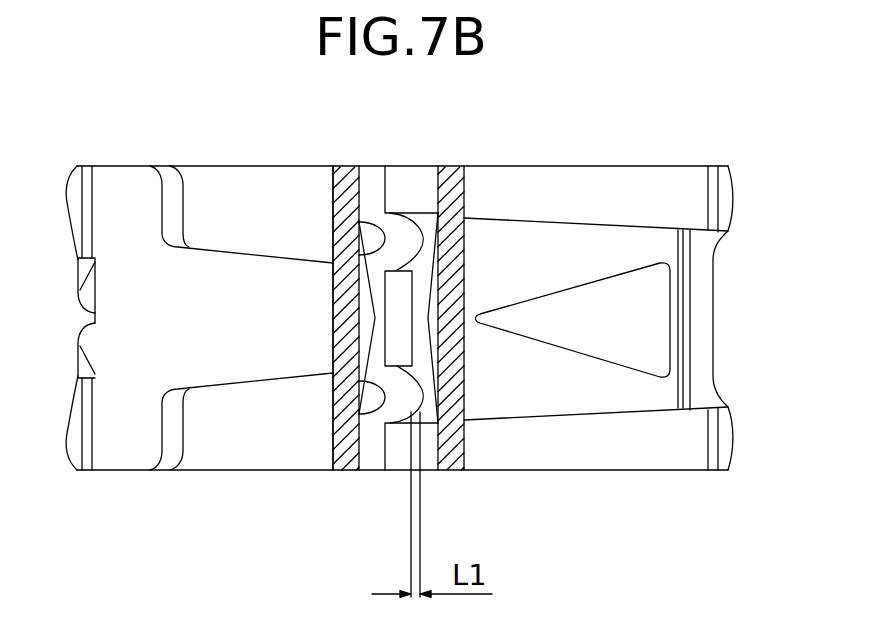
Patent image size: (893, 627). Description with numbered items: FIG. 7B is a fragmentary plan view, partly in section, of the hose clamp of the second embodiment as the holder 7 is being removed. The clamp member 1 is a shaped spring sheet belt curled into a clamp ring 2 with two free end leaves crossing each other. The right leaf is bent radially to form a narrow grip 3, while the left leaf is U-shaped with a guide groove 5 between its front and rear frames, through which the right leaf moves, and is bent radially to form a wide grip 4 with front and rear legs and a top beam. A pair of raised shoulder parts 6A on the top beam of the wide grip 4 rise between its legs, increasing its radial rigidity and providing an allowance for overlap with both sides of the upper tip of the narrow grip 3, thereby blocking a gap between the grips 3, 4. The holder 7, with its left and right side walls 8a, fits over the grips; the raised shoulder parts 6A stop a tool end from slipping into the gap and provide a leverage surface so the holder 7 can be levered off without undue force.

The clamp member 1 is at (620, 149).
The clamp ring 2 is at (126, 455).
The narrow grip 3 is at (422, 290).
The wide grip 4 is at (360, 265).
The guide groove 5 is at (593, 392).
The raised shoulder parts 6A is at (407, 235).
The holder 7 is at (327, 207).
The side walls 8a is at (333, 425).